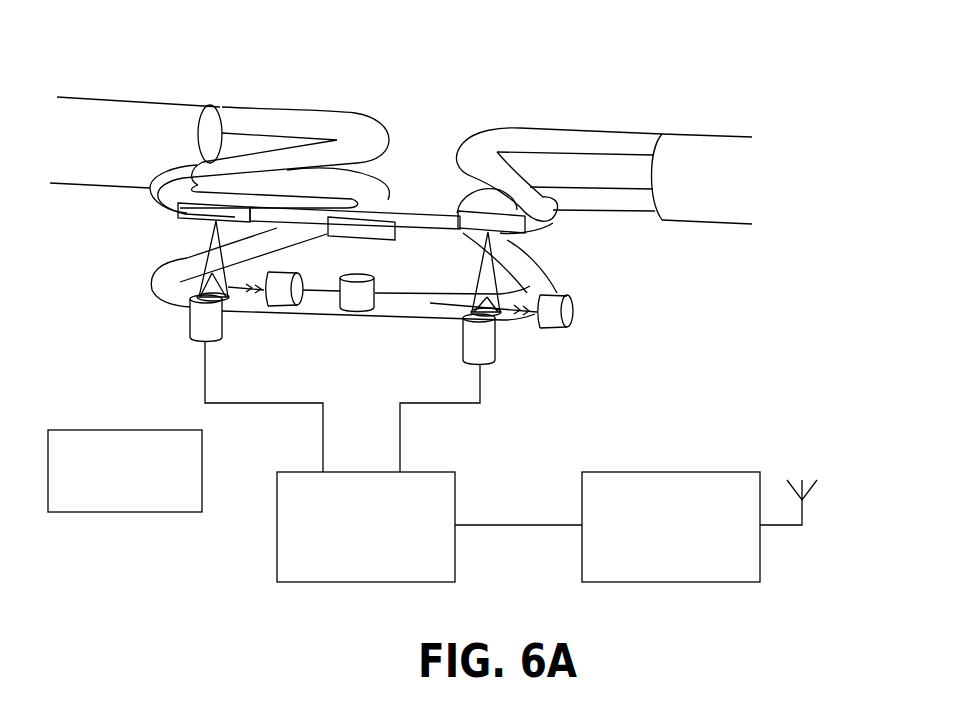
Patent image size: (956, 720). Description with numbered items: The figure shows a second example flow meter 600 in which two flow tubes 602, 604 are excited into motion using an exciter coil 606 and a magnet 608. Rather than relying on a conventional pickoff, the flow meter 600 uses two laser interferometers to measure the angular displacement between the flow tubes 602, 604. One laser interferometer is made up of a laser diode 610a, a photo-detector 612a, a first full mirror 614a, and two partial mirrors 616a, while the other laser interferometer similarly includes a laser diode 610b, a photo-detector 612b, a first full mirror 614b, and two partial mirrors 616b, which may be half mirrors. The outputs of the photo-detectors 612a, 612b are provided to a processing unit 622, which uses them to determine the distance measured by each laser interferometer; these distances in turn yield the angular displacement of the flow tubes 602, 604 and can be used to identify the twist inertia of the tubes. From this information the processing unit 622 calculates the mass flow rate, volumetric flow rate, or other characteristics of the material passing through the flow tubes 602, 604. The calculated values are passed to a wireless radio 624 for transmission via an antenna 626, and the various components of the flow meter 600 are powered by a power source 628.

The flow meter 600 is at (453, 65).
The flow tube 602 is at (580, 130).
The flow tube 604 is at (617, 211).
The exciter coil 606 is at (357, 313).
The magnet 608 is at (390, 215).
The laser diode 610a is at (190, 320).
The laser diode 610b is at (488, 362).
The photo-detector 612a is at (263, 302).
The photo-detector 612b is at (572, 315).
The first full mirror 614a is at (183, 212).
The first full mirror 614b is at (467, 240).
The partial mirrors 616a is at (167, 293).
The partial mirrors 616b is at (510, 323).
The processing unit 622 is at (367, 582).
The wireless radio 624 is at (670, 582).
The antenna 626 is at (807, 493).
The power source 628 is at (127, 513).